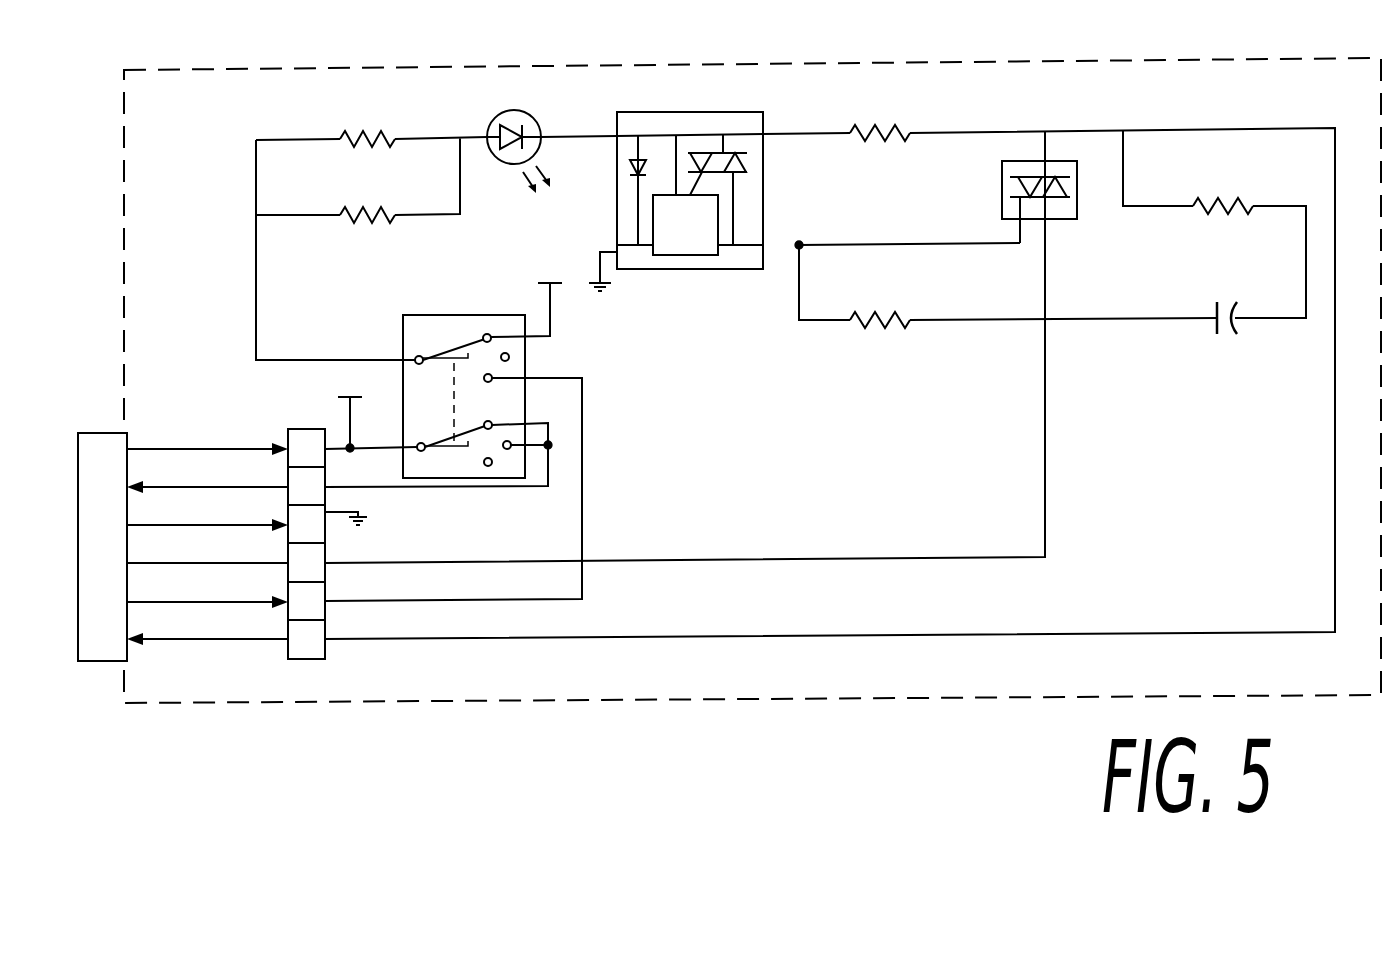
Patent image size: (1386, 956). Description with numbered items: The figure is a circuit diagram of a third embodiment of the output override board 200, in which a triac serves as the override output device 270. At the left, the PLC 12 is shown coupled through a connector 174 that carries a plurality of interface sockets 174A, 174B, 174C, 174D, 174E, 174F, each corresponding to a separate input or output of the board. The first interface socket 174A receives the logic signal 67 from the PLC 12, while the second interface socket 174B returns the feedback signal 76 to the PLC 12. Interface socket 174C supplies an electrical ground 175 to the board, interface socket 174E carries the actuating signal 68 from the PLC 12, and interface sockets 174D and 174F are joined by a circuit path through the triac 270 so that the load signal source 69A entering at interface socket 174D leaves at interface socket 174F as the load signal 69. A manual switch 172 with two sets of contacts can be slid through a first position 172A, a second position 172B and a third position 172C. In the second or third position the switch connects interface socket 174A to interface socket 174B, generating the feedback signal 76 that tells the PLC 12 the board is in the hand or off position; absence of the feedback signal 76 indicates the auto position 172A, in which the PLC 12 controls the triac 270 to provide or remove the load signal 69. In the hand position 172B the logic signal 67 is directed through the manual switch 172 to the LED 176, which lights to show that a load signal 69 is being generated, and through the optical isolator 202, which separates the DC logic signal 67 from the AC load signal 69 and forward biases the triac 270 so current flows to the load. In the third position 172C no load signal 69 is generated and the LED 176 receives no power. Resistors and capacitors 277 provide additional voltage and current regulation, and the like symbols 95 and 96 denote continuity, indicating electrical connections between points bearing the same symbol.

The output override board 200 is at (296, 66).
The PLC 12 is at (110, 565).
The connector 174 is at (312, 665).
The first interface socket 174A is at (287, 434).
The second interface socket 174B is at (290, 480).
The interface socket 174C is at (288, 508).
The interface socket 174D is at (292, 553).
The interface socket 174E is at (292, 590).
The interface socket 174F is at (292, 630).
The logic signal 67 is at (160, 446).
The feedback signal 76 is at (152, 490).
The electrical ground 175 is at (140, 528).
The load signal source 69A is at (148, 566).
The actuating signal 68 is at (148, 606).
The load signal 69 is at (160, 645).
The manual switch 172 is at (416, 303).
The first position 172A is at (492, 382).
The second position 172B is at (485, 335).
The third position 172C is at (509, 356).
The LED 176 is at (520, 116).
The optical isolator 202 is at (695, 112).
The override output device 270 is at (1020, 160).
The resistors and capacitors 277 is at (368, 132).
The circuit continuity symbol 96 is at (548, 238).
The circuit continuity symbol 95 is at (612, 288).